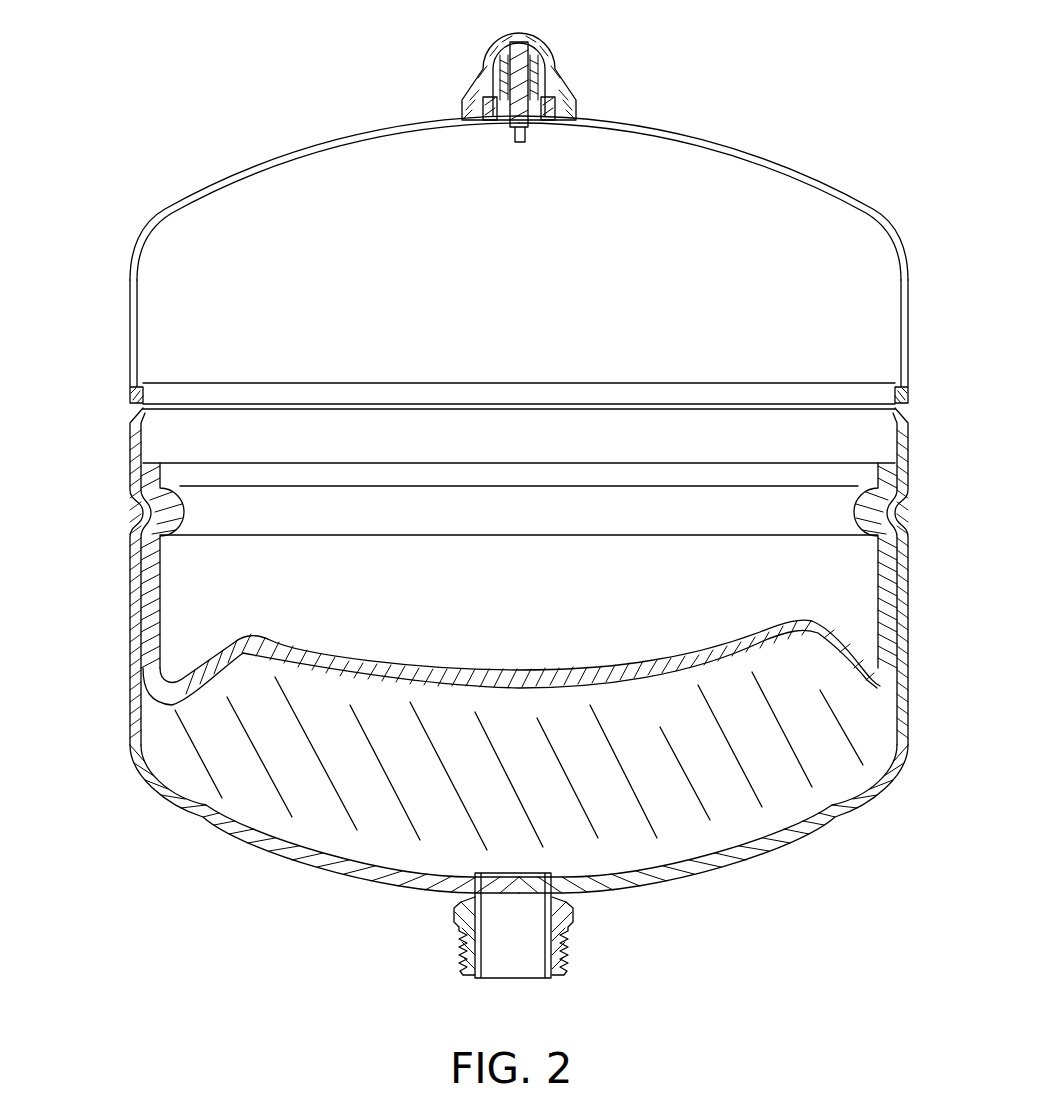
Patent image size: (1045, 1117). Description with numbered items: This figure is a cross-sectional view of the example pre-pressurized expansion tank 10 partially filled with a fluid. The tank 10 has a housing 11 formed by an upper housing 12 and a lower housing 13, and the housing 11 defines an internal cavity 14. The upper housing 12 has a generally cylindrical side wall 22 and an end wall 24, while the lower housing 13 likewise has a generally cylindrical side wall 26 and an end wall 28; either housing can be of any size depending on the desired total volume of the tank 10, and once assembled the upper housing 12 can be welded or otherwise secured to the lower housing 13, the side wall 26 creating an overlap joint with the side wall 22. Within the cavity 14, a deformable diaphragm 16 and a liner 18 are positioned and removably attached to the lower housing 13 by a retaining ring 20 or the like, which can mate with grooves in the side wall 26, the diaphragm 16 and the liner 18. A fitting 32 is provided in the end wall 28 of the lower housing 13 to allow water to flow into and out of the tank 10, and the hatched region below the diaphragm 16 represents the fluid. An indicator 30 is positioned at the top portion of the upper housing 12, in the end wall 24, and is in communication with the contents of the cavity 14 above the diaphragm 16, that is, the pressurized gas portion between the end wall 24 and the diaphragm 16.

The tank 10 is at (824, 78).
The housing 11 is at (75, 281).
The upper housing 12 is at (124, 345).
The lower housing 13 is at (123, 558).
The internal cavity 14 is at (760, 233).
The deformable diaphragm 16 is at (372, 662).
The liner 18 is at (142, 668).
The retaining ring 20 is at (553, 505).
The side wall 22 is at (912, 296).
The end wall 24 is at (697, 146).
The side wall 26 is at (906, 603).
The end wall 28 is at (612, 890).
The indicator 30 is at (498, 42).
The fitting 32 is at (573, 921).